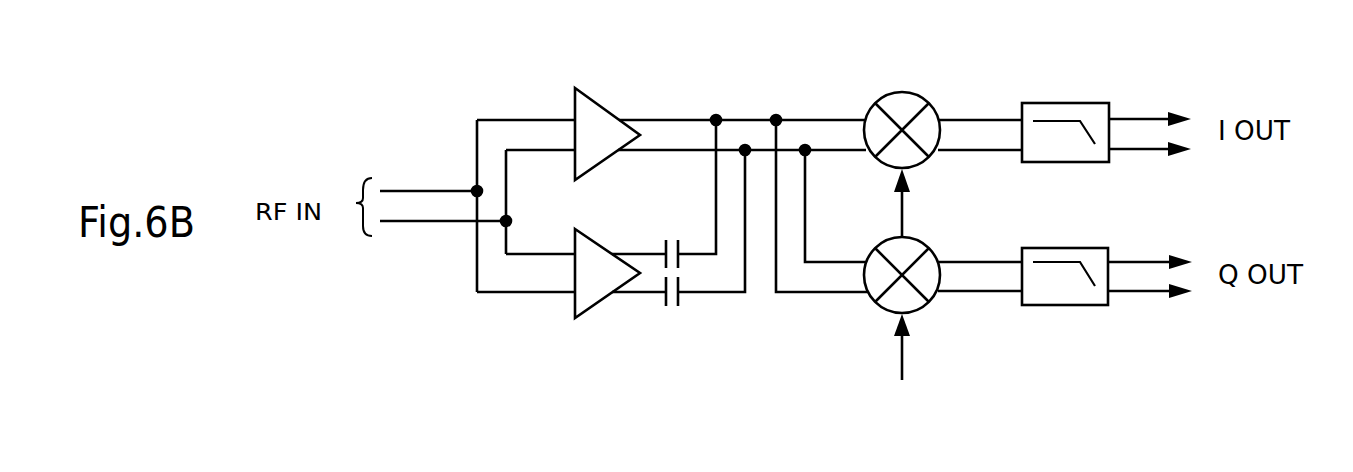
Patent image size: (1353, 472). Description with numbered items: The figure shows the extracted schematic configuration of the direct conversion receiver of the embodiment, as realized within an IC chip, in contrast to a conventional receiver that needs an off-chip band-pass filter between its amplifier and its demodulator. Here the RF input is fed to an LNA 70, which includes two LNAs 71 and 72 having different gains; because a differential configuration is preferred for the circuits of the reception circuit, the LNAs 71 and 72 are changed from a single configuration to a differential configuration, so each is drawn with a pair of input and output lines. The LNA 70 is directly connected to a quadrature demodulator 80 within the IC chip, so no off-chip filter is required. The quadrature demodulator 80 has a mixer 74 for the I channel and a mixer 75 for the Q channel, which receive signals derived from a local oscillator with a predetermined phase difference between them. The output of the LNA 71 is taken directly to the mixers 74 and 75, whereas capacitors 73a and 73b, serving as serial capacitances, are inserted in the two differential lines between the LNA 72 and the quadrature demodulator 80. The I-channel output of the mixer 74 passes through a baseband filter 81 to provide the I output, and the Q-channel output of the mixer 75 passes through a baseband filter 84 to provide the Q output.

The LNA 70 is at (628, 86).
The LNA 71 is at (575, 99).
The LNA 72 is at (575, 300).
The capacitor 73a is at (665, 242).
The capacitor 73b is at (665, 303).
The mixer 74 is at (893, 92).
The mixer 75 is at (921, 306).
The quadrature demodulator 80 is at (827, 319).
The baseband filter 81 is at (1083, 103).
The baseband filter 84 is at (1085, 248).